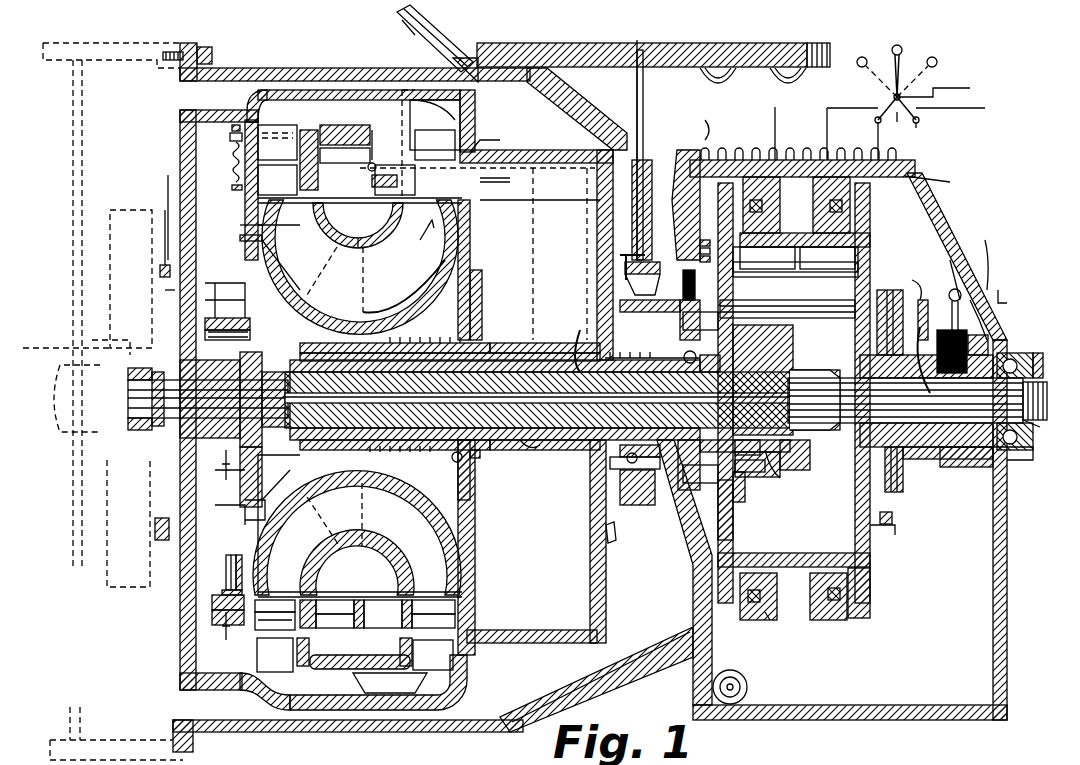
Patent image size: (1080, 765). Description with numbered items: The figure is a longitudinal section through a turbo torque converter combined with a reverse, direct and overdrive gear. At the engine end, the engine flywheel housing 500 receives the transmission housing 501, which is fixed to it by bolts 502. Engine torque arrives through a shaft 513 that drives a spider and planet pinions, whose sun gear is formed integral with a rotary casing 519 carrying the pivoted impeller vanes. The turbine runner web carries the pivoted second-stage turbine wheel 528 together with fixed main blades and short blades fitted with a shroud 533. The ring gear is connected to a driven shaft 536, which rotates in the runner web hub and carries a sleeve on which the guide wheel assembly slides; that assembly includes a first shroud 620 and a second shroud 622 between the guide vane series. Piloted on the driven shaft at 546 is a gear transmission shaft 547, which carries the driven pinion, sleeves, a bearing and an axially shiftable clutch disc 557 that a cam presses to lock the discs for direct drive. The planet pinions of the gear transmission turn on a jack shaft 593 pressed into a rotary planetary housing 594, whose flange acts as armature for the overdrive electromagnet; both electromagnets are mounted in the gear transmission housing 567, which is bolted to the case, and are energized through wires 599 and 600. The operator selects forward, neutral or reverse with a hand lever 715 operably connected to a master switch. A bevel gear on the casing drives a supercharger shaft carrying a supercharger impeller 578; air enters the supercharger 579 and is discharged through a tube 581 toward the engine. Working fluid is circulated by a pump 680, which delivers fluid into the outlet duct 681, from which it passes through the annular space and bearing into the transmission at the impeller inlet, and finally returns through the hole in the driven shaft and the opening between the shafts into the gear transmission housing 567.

The transmission housing 501 is at (232, 74).
The bolts 502 is at (212, 52).
The rotary casing 519 is at (196, 210).
The driven shaft 536 is at (537, 400).
The shaft 513 is at (128, 398).
The gear transmission shaft 547 is at (917, 400).
The second-stage turbine wheel 528 is at (290, 232).
The shroud 533 is at (358, 225).
The first shroud 620 is at (425, 590).
The second shroud 622 is at (372, 590).
The gear transmission housing 567 is at (1007, 660).
The wire 599 is at (802, 142).
The wire 600 is at (798, 134).
The hand lever 715 is at (905, 55).
The pump 680 is at (747, 687).
The rotary planetary housing 594 is at (765, 553).
The supercharger impeller 578 is at (745, 67).
The supercharger 579 is at (800, 43).
The tube 581 is at (420, 48).
The engine flywheel housing 500 is at (70, 118).
The outlet duct 681 is at (700, 670).
The clutch disc 557 is at (905, 492).
The pilot 546 is at (789, 380).
The jack shaft 593 is at (787, 309).